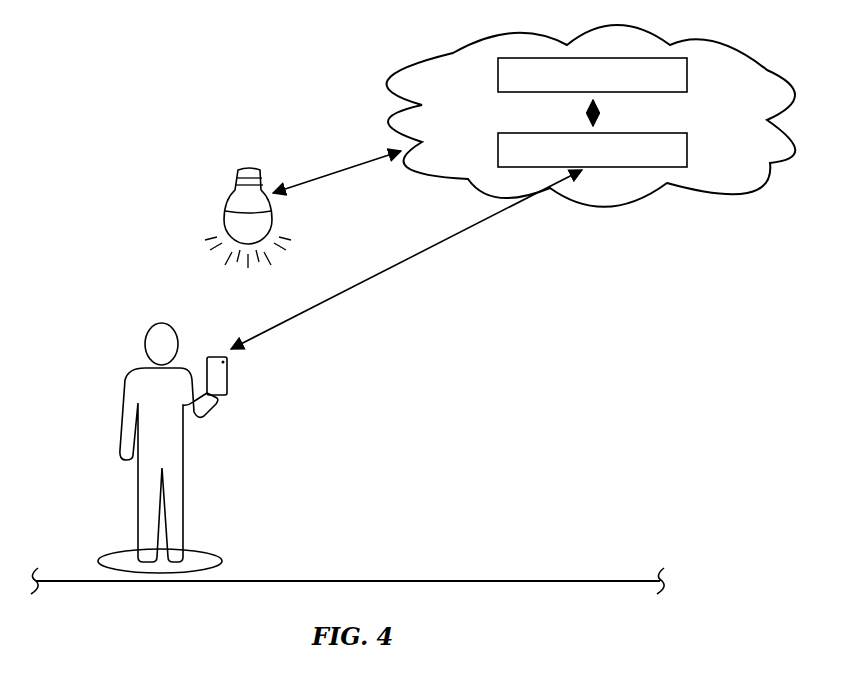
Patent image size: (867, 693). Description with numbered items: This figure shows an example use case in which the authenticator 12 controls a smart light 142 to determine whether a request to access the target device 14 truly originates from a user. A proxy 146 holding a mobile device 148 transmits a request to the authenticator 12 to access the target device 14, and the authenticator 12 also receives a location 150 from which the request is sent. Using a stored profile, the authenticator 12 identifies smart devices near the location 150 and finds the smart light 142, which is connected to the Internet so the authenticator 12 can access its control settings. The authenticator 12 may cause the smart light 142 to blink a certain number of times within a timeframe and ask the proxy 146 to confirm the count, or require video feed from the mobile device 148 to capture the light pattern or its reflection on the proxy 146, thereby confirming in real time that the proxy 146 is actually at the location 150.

The authenticator 12 is at (688, 142).
The target device 14 is at (688, 67).
The smart light 142 is at (226, 212).
The proxy 146 is at (184, 447).
The mobile device 148 is at (228, 373).
The location 150 is at (221, 556).